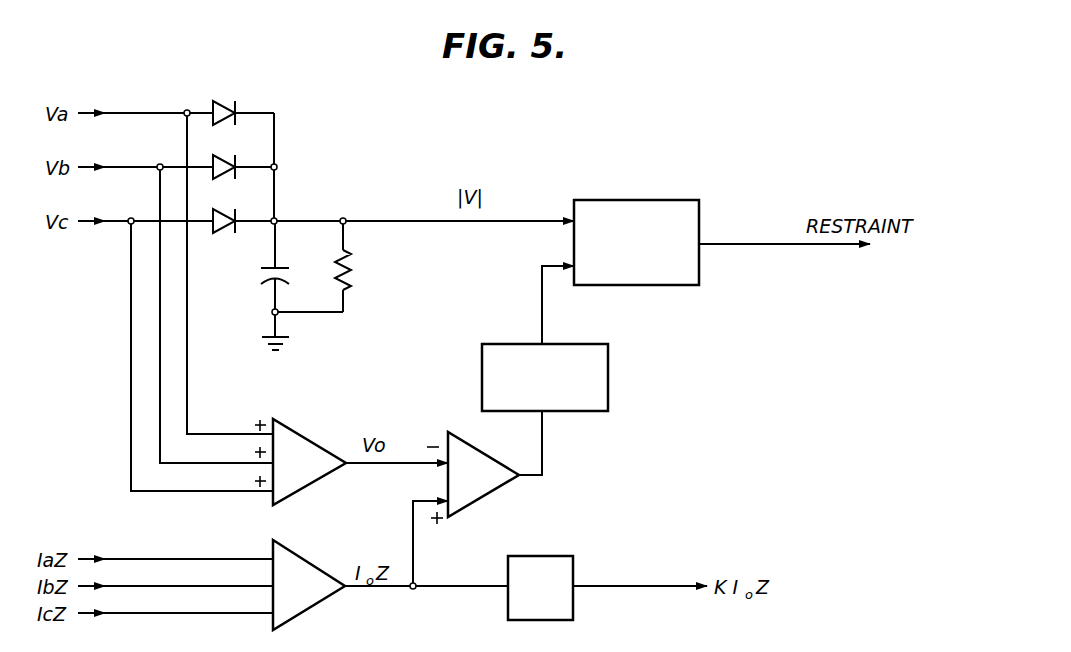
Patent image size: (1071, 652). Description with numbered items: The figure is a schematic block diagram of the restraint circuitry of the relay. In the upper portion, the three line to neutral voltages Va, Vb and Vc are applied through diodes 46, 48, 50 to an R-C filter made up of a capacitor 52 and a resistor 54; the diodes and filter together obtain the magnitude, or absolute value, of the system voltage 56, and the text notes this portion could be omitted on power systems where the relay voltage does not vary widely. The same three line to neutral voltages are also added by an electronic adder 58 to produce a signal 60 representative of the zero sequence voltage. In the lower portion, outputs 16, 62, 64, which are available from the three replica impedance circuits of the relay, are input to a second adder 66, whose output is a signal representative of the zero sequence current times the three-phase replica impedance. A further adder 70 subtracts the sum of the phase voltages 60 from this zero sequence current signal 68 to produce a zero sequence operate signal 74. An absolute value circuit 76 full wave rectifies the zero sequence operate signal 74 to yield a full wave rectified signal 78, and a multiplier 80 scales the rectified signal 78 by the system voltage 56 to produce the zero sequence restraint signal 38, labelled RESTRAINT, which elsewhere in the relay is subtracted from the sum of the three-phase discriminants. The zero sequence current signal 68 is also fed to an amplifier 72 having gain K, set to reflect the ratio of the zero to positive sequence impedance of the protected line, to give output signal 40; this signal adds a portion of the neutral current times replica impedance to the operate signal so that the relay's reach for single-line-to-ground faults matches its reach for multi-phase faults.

The replica impedance circuit output 16 is at (160, 558).
The zero sequence restraint signal 38 is at (743, 243).
The output signal 40 is at (635, 584).
The diode 46 is at (230, 106).
The diode 48 is at (230, 160).
The diode 50 is at (230, 214).
The R-C filter capacitor 52 is at (262, 272).
The R-C filter resistor 54 is at (352, 272).
The system voltage 56 is at (386, 219).
The electronic adder 58 is at (306, 432).
The zero sequence voltage signal 60 is at (404, 460).
The replica impedance circuit output 62 is at (206, 585).
The replica impedance circuit output 64 is at (232, 613).
The adder 66 is at (308, 560).
The zero sequence current signal 68 is at (388, 596).
The adder 70 is at (487, 456).
The amplifier 72 is at (547, 555).
The zero sequence operate signal 74 is at (543, 456).
The absolute value circuit 76 is at (609, 379).
The full wave rectified signal 78 is at (543, 314).
The multiplier 80 is at (641, 199).